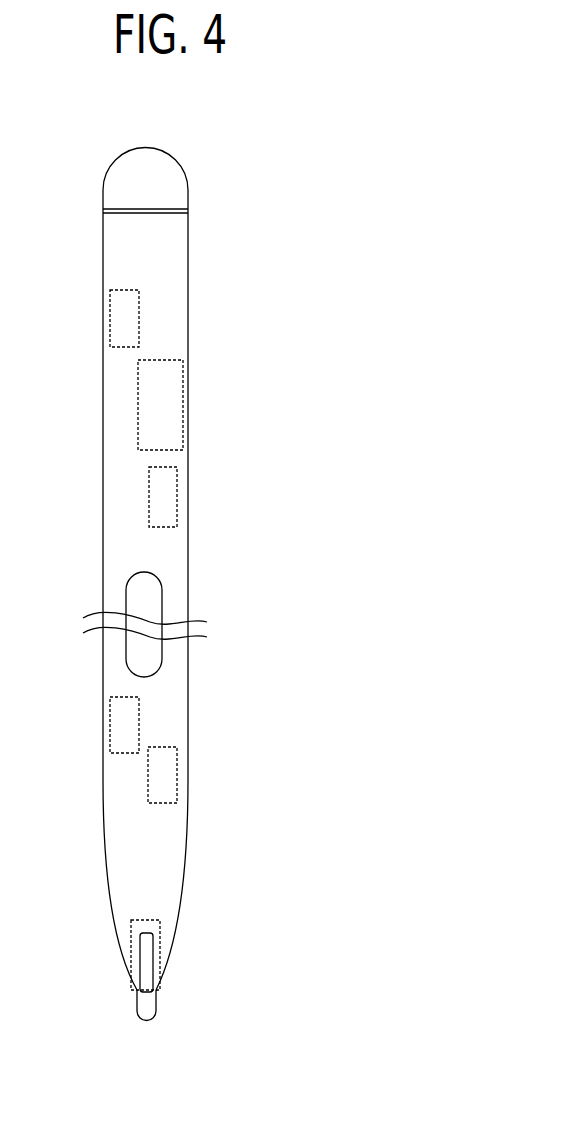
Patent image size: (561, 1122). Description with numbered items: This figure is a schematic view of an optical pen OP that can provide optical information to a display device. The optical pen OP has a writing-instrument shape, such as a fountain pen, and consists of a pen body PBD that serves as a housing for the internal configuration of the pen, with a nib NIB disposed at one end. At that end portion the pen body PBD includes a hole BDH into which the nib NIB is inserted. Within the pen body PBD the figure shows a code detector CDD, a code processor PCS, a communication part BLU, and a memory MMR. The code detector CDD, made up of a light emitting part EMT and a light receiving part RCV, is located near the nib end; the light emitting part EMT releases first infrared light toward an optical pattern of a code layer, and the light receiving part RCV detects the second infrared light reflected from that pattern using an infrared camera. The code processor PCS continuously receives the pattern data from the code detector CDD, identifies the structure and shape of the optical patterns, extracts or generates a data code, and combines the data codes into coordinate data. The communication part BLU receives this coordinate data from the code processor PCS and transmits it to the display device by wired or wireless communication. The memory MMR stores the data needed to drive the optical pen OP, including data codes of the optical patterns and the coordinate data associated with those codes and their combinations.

The optical pen OP is at (190, 146).
The pen body PBD is at (189, 292).
The communication part BLU is at (117, 312).
The memory MMR is at (170, 403).
The code processor PCS is at (173, 497).
The light receiving part RCV is at (117, 729).
The light emitting part EMT is at (173, 781).
The code detector CDD is at (244, 896).
The hole BDH is at (158, 947).
The nib NIB is at (152, 1013).